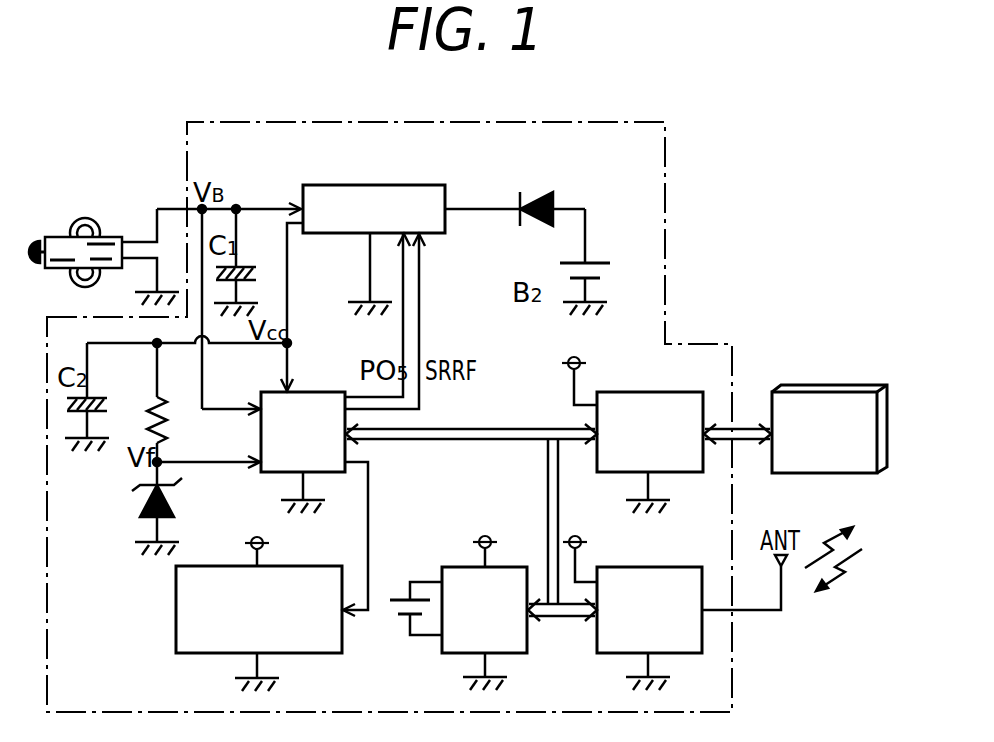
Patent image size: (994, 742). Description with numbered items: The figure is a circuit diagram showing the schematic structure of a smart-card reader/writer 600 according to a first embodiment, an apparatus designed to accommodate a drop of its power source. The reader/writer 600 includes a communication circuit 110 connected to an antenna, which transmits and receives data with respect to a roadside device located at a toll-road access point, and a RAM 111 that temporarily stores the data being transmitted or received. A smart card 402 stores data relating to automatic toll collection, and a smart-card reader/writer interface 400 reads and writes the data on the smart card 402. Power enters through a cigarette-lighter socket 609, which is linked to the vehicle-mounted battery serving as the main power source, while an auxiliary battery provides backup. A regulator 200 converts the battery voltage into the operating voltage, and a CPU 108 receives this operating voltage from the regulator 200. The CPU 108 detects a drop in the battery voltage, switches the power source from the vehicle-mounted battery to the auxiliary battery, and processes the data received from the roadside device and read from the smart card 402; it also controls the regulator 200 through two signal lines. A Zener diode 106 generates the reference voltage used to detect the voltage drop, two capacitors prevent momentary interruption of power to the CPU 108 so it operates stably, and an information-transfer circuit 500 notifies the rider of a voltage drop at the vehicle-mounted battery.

The cigarette-lighter socket 609 is at (113, 236).
The regulator 200 is at (398, 184).
The CPU 108 is at (270, 393).
The Zener diode 106 is at (175, 511).
The smart-card reader/writer interface 400 is at (644, 392).
The smart card 402 is at (821, 391).
The information-transfer circuit 500 is at (341, 638).
The RAM 111 is at (528, 640).
The communication circuit 110 is at (660, 566).
The smart-card reader/writer 600 is at (734, 640).